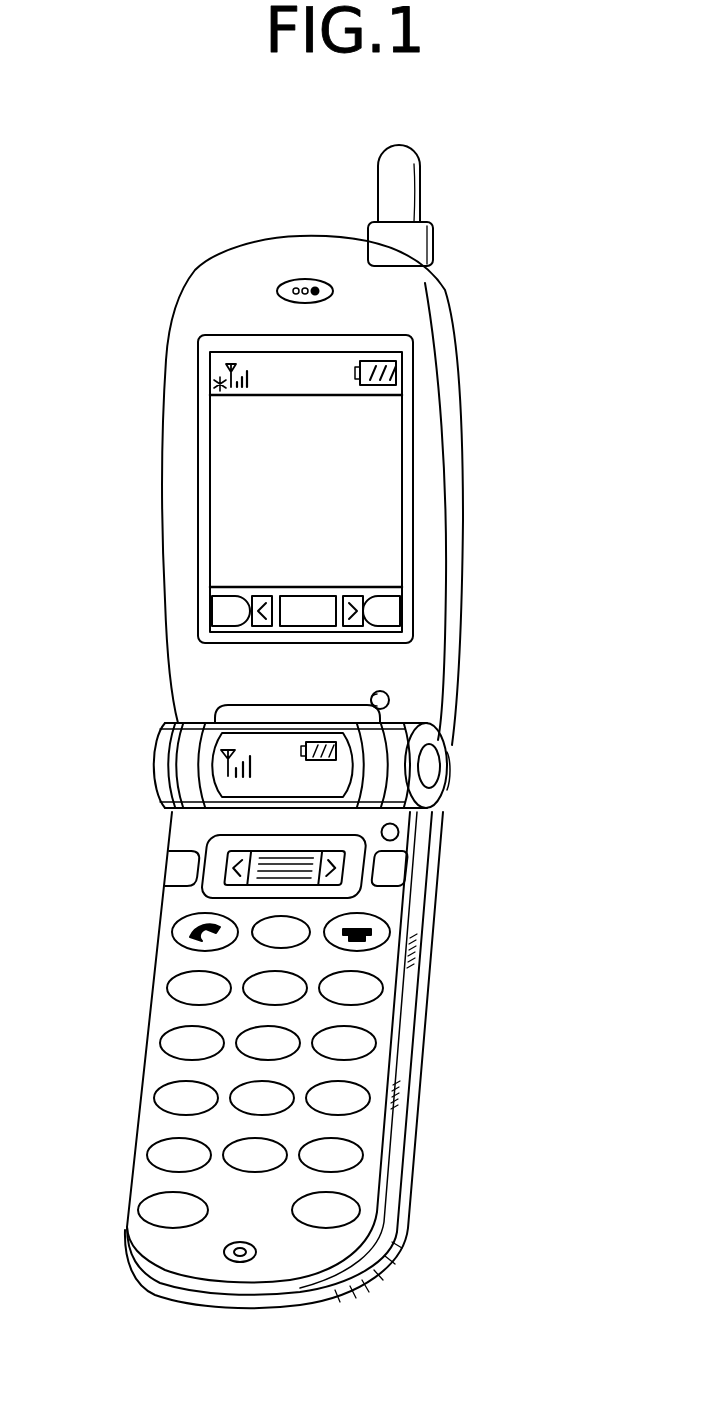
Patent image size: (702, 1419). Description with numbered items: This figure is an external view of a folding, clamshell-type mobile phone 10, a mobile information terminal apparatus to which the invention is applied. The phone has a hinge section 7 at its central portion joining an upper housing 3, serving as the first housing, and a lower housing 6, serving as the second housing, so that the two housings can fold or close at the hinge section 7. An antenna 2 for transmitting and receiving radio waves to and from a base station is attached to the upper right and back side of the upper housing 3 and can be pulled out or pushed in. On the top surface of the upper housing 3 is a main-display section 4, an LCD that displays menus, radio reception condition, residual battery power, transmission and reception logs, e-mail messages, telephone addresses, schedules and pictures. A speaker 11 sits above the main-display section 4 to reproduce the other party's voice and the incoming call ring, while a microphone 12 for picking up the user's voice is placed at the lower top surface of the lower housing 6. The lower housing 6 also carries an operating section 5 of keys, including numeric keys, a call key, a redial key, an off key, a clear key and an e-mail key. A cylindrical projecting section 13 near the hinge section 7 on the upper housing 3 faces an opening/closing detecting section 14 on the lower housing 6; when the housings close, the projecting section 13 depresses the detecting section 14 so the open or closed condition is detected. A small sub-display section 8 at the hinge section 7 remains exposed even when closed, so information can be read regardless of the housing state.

The antenna 2 is at (405, 186).
The upper housing 3 is at (293, 452).
The main-display section 4 is at (380, 492).
The operating section 5 is at (124, 843).
The lower housing 6 is at (398, 1097).
The hinge section 7 is at (490, 788).
The sub-display section 8 is at (283, 752).
The folding type mobile phone 10 is at (592, 1327).
The speaker 11 is at (303, 286).
The microphone 12 is at (243, 1262).
The projecting section 13 is at (389, 700).
The opening/closing detecting section 14 is at (398, 833).